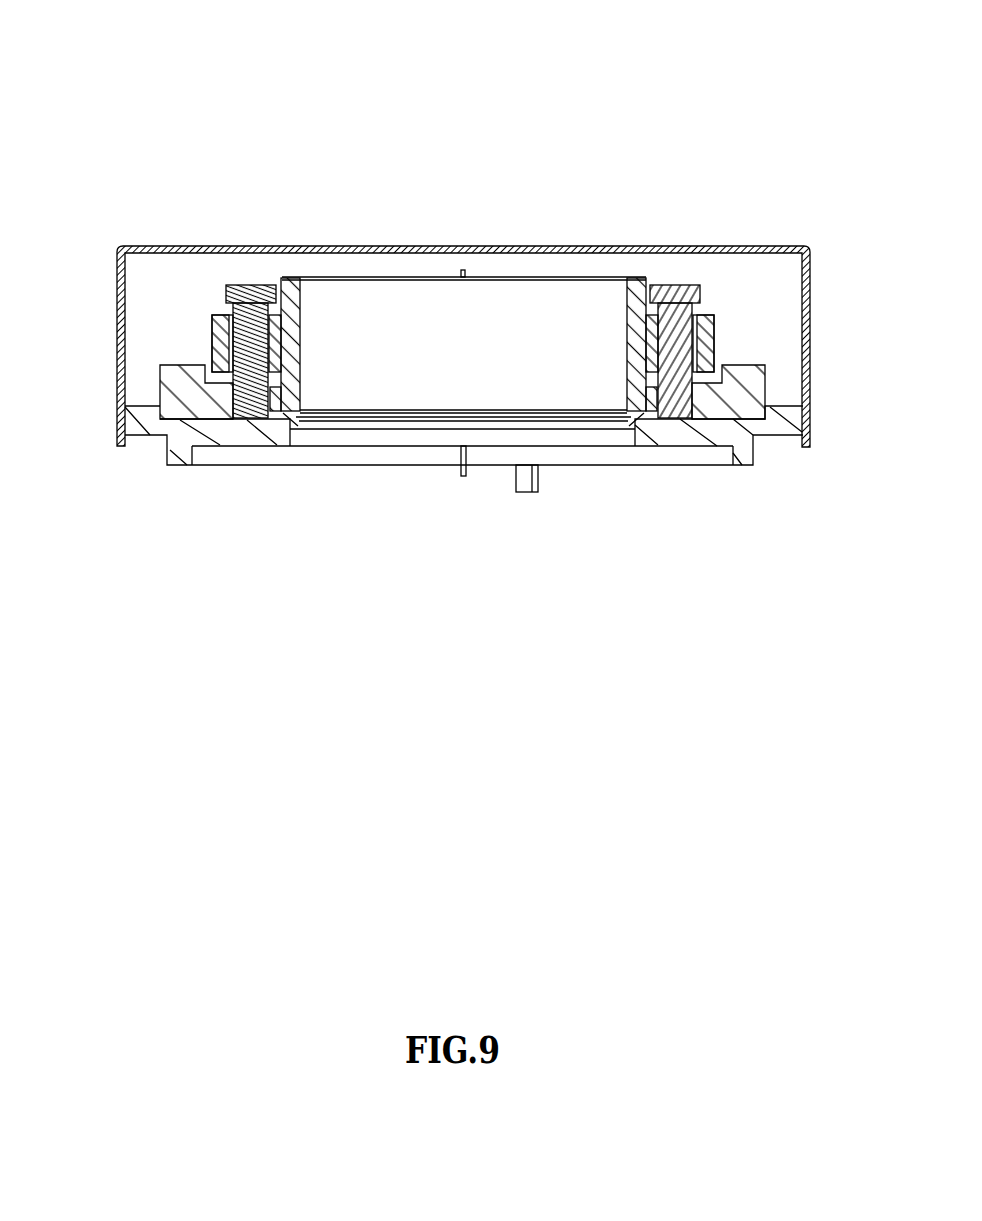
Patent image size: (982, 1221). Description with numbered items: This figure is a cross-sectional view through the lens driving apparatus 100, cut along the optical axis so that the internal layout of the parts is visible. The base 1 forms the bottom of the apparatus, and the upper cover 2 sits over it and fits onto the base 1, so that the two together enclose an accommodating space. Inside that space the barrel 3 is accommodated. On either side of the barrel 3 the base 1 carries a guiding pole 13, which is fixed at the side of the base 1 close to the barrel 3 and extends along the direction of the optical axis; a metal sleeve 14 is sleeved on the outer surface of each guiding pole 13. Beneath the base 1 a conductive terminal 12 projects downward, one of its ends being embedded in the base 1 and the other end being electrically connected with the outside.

The lens driving apparatus 100 is at (467, 41).
The base 1 is at (230, 433).
The upper cover 2 is at (180, 247).
The barrel 3 is at (213, 338).
The conductive terminal 12 is at (530, 478).
The guiding pole 13 is at (247, 330).
The metal sleeve 14 is at (270, 350).